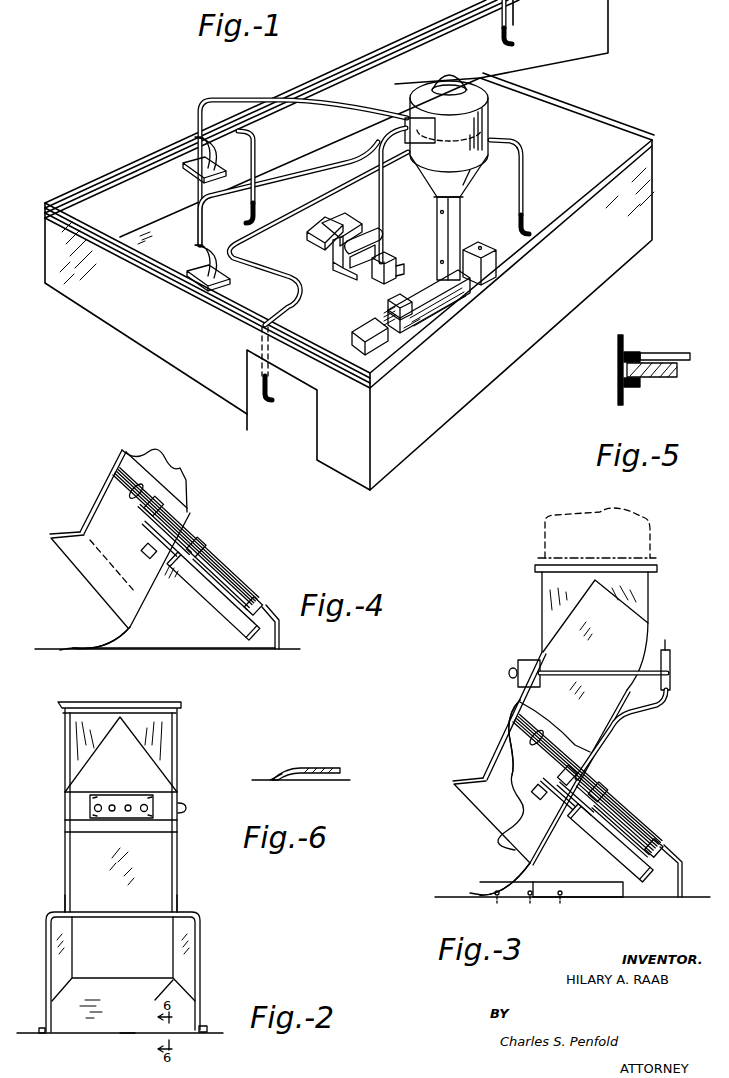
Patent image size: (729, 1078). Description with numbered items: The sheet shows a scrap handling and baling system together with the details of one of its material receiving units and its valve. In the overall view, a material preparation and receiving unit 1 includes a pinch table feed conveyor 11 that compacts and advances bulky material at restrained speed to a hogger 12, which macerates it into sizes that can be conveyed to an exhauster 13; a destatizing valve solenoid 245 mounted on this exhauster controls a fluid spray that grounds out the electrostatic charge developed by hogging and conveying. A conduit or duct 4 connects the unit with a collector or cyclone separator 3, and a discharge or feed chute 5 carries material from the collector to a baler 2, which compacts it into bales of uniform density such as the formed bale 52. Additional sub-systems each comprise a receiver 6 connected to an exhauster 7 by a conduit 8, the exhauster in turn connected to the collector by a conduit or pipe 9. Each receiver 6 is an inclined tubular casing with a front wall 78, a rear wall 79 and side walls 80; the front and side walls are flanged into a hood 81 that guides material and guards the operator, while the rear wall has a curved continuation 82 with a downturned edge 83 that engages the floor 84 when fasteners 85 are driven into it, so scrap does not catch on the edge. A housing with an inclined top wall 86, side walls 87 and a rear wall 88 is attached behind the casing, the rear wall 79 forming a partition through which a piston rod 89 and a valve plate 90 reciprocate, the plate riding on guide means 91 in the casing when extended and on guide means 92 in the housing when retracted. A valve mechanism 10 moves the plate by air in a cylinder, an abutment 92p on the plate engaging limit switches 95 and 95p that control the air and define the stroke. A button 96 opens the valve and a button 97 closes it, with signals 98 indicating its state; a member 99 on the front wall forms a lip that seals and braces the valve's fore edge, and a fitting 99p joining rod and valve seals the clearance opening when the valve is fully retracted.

In FIG. 1, the material preparation and receiving unit 1 is at (356, 224).
In FIG. 1, the baler 2 is at (452, 297).
In FIG. 1, the collector or cyclone separator 3 is at (490, 115).
In FIG. 1, the conduit or duct 4 is at (385, 200).
In FIG. 1, the discharge or feed chute 5 is at (462, 205).
In FIG. 3, the discharge or feed chute 5 is at (560, 744).
In FIG. 1, the receiver 6 is at (258, 213).
In FIG. 4, the receiver 6 is at (93, 488).
In FIG. 2, the receiver 6 is at (188, 869).
In FIG. 3, the receiver 6 is at (522, 645).
In FIG. 1, the exhauster 7 is at (192, 155).
In FIG. 1, the conduit 8 is at (323, 194).
In FIG. 1, the conduit or pipe 9 is at (340, 104).
In FIG. 4, the valve mechanism 10 is at (238, 552).
In FIG. 3, the valve mechanism 10 is at (630, 793).
In FIG. 1, the pinch table feed conveyor 11 is at (338, 222).
In FIG. 1, the hogger 12 is at (335, 265).
In FIG. 1, the exhauster 13 is at (375, 281).
In FIG. 1, the formed bale 52 is at (406, 305).
In FIG. 1, the destatizing valve solenoid 245 is at (391, 257).
In FIG. 4, the front wall 78 is at (116, 456).
In FIG. 2, the front wall 78 is at (80, 875).
In FIG. 3, the front wall 78 is at (500, 748).
In FIG. 4, the rear wall 79 is at (144, 566).
In FIG. 2, the rear wall 79 is at (134, 930).
In FIG. 3, the rear wall 79 is at (545, 811).
In FIG. 5, the side walls 80 is at (618, 393).
In FIG. 4, the side walls 80 is at (158, 482).
In FIG. 2, the side walls 80 is at (178, 848).
In FIG. 3, the side walls 80 is at (520, 700).
In FIG. 4, the hood 81 is at (89, 580).
In FIG. 2, the hood 81 is at (100, 914).
In FIG. 3, the hood 81 is at (463, 778).
In FIG. 4, the curved continuation 82 is at (112, 630).
In FIG. 6, the curved continuation 82 is at (302, 767).
In FIG. 2, the curved continuation 82 is at (158, 998).
In FIG. 3, the curved continuation 82 is at (505, 879).
In FIG. 4, the downturned edge 83 is at (70, 645).
In FIG. 6, the downturned edge 83 is at (274, 777).
In FIG. 2, the downturned edge 83 is at (126, 1034).
In FIG. 3, the downturned edge 83 is at (477, 893).
In FIG. 4, the floor 84 is at (55, 648).
In FIG. 6, the floor 84 is at (342, 779).
In FIG. 2, the floor 84 is at (28, 1032).
In FIG. 3, the floor 84 is at (452, 896).
In FIG. 2, the fasteners 85 is at (205, 1028).
In FIG. 3, the fasteners 85 is at (548, 896).
In FIG. 4, the inclined top wall 86 is at (231, 577).
In FIG. 3, the inclined top wall 86 is at (630, 821).
In FIG. 4, the side walls 87 is at (203, 640).
In FIG. 3, the side walls 87 is at (525, 872).
In FIG. 4, the rear wall 88 is at (282, 637).
In FIG. 3, the rear wall 88 is at (684, 877).
In FIG. 4, the piston rod 89 is at (148, 547).
In FIG. 3, the piston rod 89 is at (567, 815).
In FIG. 5, the valve plate 90 is at (672, 370).
In FIG. 4, the valve plate 90 is at (173, 520).
In FIG. 3, the valve plate 90 is at (598, 836).
In FIG. 5, the guide means 91 is at (636, 352).
In FIG. 4, the guide means 91 is at (140, 487).
In FIG. 3, the guide means 91 is at (546, 734).
In FIG. 3, the guide means 92 is at (641, 807).
In FIG. 4, the abutment 92p is at (237, 566).
In FIG. 3, the abutment 92p is at (619, 805).
In FIG. 4, the limit switch 95 is at (273, 604).
In FIG. 3, the limit switch 95 is at (675, 848).
In FIG. 4, the limit switch 95p is at (216, 541).
In FIG. 3, the limit switch 95p is at (612, 780).
In FIG. 2, the button 96 is at (100, 804).
In FIG. 2, the button 97 is at (146, 804).
In FIG. 3, the button 97 is at (517, 668).
In FIG. 2, the signals 98 is at (128, 804).
In FIG. 5, the member 99 is at (672, 354).
In FIG. 4, the member 99 is at (197, 514).
In FIG. 3, the member 99 is at (577, 773).
In FIG. 4, the fitting 99p is at (129, 512).
In FIG. 3, the fitting 99p is at (556, 787).